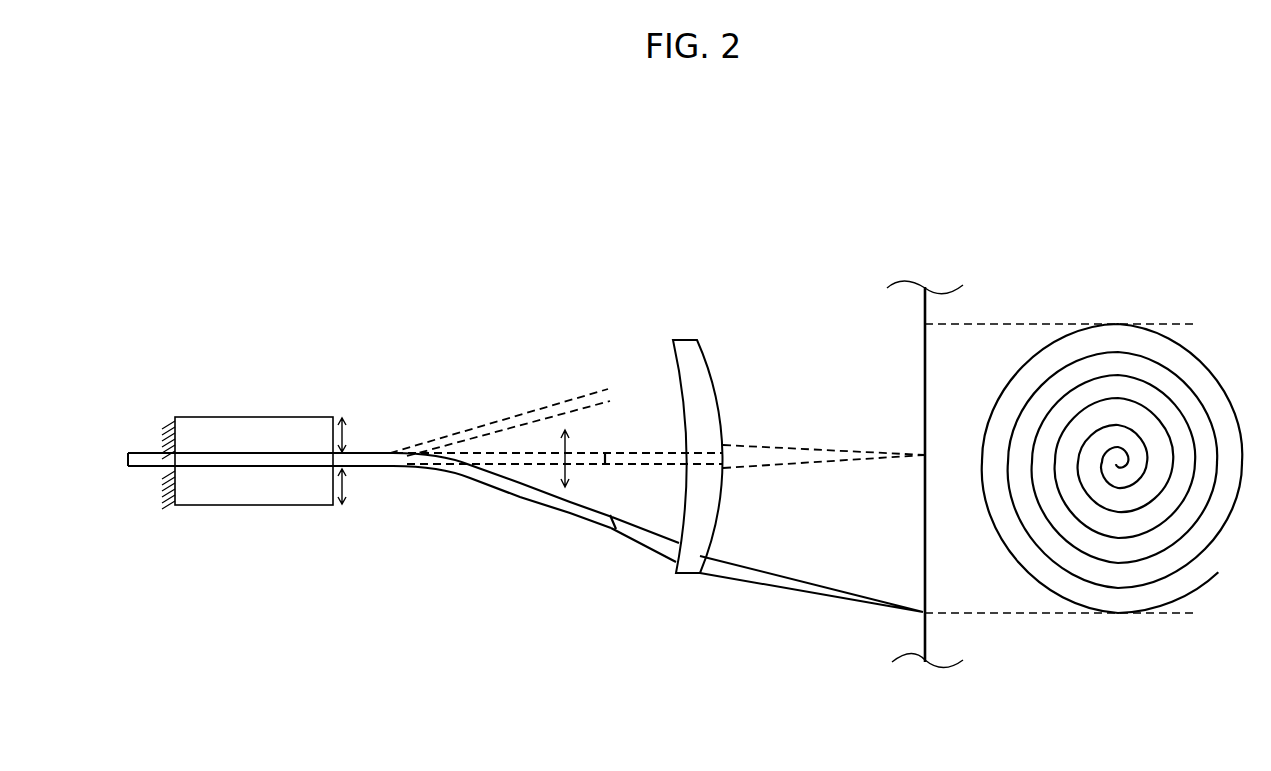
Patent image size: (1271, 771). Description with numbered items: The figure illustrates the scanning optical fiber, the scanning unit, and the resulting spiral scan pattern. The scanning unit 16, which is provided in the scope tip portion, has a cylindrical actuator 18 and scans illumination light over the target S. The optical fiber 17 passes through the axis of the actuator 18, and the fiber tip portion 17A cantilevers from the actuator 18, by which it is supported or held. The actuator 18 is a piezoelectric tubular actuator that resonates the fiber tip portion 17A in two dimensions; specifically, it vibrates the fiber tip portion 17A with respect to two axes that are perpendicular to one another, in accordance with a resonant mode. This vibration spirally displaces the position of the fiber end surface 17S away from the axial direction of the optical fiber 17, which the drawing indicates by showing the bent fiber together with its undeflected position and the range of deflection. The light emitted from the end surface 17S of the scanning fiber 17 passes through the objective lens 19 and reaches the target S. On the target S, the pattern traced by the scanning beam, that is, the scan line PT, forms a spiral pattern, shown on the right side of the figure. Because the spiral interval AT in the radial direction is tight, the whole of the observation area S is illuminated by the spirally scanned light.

The scanning unit 16 is at (247, 347).
The optical fiber 17 is at (145, 473).
The fiber tip portion 17A is at (560, 505).
The fiber end surface 17S is at (614, 530).
The actuator 18 is at (255, 493).
The objective lens 19 is at (708, 368).
The target S is at (1207, 308).
The spiral interval AT is at (1023, 397).
The scan line PT is at (1117, 627).